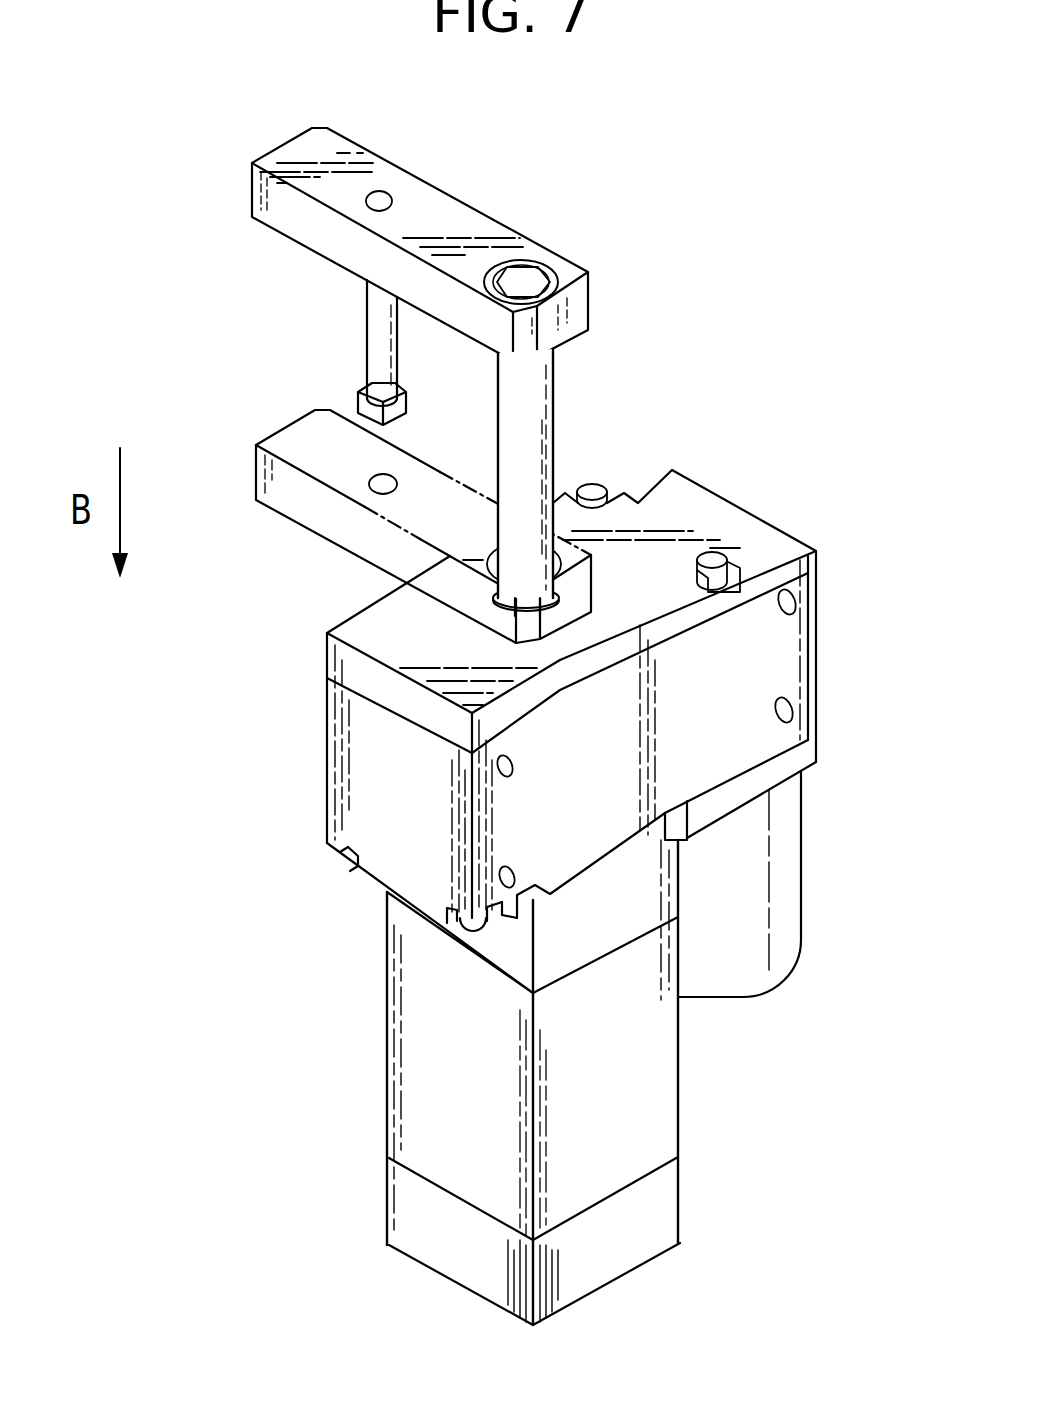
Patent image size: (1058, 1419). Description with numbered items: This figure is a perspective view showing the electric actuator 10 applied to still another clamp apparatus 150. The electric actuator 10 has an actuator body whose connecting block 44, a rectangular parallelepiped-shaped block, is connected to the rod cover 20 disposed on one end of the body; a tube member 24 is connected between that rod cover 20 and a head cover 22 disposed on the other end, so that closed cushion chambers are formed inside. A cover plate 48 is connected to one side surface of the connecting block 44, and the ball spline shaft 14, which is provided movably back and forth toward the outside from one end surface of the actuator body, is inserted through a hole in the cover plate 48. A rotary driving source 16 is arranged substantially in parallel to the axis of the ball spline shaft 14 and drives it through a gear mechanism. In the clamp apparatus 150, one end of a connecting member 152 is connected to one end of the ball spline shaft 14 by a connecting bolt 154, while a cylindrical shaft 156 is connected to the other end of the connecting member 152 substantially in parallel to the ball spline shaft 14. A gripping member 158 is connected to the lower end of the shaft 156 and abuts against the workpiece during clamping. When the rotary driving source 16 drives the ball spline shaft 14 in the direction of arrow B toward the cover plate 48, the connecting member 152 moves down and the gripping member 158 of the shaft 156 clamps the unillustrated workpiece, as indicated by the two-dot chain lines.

The electric actuator 10 is at (690, 1092).
The ball spline shaft 14 is at (540, 457).
The rotary driving source 16 is at (760, 873).
The rod cover 20 is at (477, 945).
The head cover 22 is at (440, 1217).
The tube member 24 is at (438, 1103).
The connecting block 44 is at (355, 750).
The cover plate 48 is at (375, 637).
The clamp apparatus 150 is at (767, 119).
The connecting member 152 is at (443, 210).
The connecting bolt 154 is at (524, 283).
The cylindrical shaft 156 is at (378, 338).
The gripping member 158 is at (360, 396).